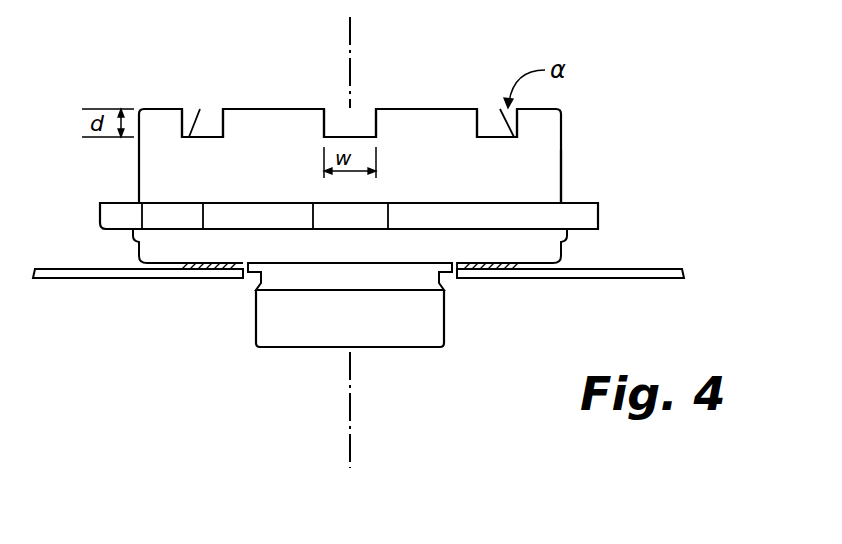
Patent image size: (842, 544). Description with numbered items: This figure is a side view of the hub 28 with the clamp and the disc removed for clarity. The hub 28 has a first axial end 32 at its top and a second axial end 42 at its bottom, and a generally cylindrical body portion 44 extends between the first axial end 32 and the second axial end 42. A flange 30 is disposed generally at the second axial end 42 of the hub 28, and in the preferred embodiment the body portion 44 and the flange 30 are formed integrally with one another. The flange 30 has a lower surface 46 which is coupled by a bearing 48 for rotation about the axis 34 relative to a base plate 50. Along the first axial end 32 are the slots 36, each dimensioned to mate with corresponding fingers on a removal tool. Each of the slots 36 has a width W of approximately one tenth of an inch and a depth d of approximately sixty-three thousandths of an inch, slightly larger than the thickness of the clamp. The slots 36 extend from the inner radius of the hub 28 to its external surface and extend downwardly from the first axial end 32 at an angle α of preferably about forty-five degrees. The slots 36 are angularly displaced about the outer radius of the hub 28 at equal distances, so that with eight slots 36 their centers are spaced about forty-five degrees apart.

The hub 28 is at (557, 128).
The flange 30 is at (598, 214).
The first axial end 32 is at (537, 108).
The axis 34 is at (352, 33).
The slots 36 is at (322, 125).
The second axial end 42 is at (546, 203).
The body portion 44 is at (440, 172).
The lower surface 46 is at (550, 268).
The bearing 48 is at (497, 273).
The base plate 50 is at (84, 279).